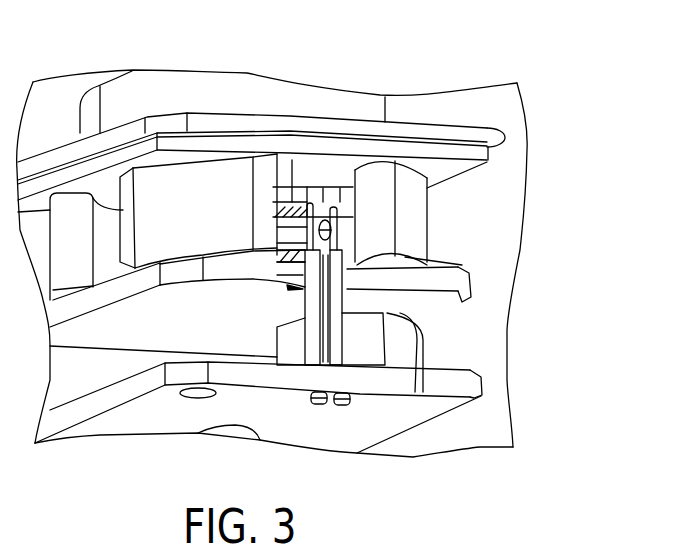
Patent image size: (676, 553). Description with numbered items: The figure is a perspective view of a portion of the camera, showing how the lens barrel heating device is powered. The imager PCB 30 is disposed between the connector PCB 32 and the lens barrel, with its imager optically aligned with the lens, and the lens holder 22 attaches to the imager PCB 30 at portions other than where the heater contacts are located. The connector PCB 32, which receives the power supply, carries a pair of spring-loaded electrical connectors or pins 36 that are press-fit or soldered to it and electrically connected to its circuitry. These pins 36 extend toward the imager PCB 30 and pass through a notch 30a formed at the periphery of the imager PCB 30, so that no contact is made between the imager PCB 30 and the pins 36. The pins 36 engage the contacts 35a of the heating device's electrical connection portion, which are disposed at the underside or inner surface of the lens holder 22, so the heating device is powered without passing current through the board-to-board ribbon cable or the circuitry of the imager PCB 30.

The lens holder 22 is at (453, 130).
The imager PCB 30 is at (203, 330).
The notch 30a is at (363, 276).
The connector PCB 32 is at (127, 413).
The contacts 35a is at (290, 193).
The spring-loaded electrical connectors 36 is at (383, 326).